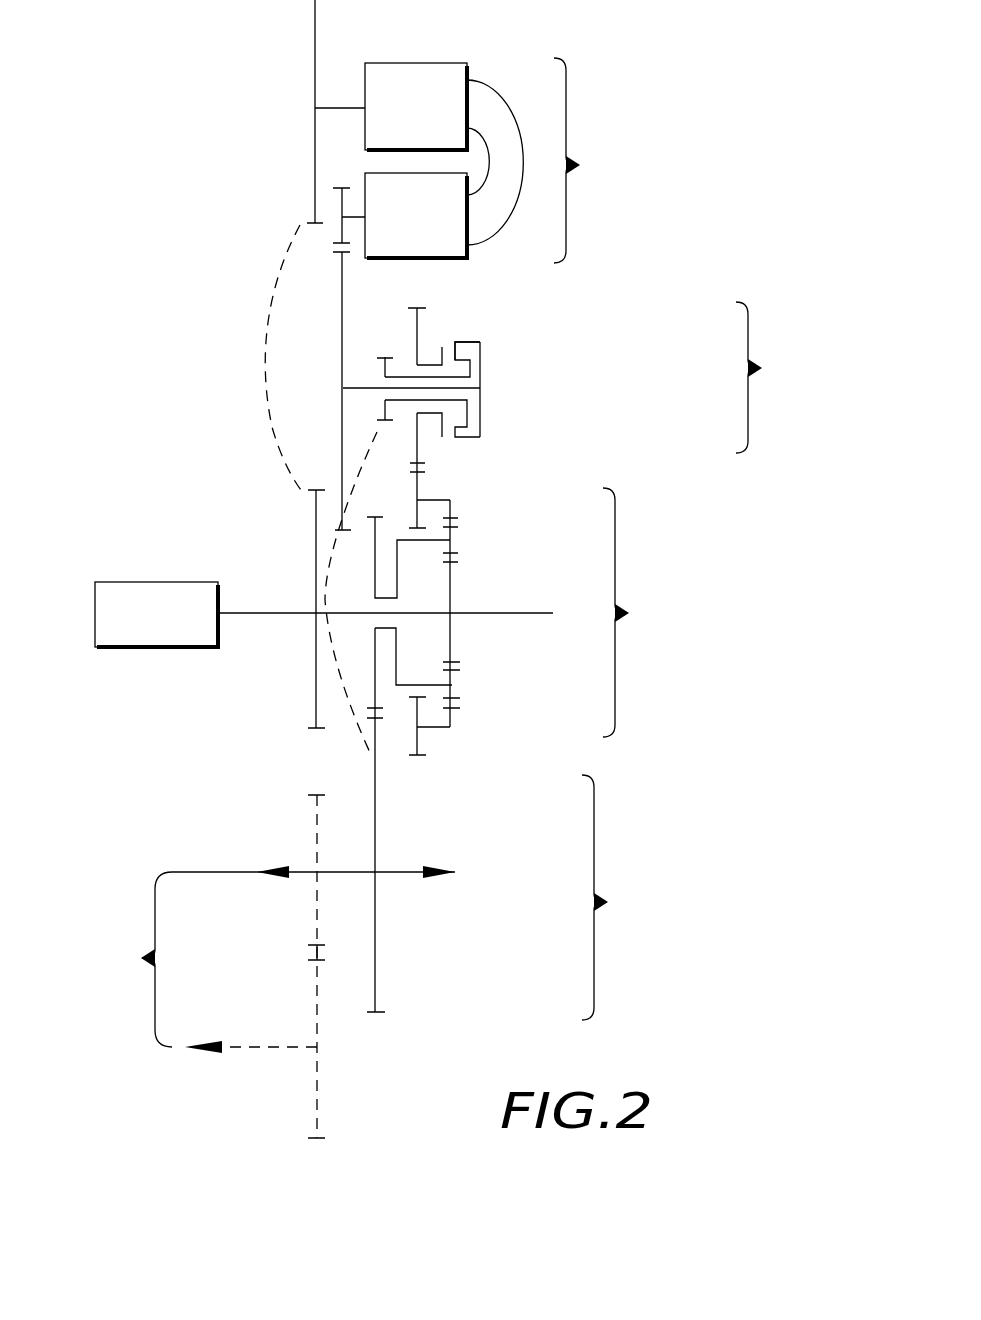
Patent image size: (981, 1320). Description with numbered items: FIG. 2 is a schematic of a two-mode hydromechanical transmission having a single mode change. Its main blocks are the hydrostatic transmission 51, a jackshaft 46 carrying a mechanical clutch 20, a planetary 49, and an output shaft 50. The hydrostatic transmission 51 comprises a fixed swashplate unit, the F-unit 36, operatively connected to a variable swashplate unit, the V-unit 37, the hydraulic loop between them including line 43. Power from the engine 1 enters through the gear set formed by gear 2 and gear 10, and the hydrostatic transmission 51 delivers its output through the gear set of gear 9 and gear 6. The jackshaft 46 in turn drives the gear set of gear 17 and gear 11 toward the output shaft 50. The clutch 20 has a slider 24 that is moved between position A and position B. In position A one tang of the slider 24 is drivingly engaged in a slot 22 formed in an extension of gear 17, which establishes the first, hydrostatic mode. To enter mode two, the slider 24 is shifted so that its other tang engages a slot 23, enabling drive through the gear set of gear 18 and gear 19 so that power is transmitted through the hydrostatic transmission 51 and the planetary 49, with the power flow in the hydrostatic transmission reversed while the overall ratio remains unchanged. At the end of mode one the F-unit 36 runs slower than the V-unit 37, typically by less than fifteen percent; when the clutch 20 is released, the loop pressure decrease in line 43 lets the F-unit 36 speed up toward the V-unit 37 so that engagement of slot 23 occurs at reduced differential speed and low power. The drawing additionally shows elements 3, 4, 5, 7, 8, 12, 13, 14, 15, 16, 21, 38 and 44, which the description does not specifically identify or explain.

The engine 1 is at (143, 583).
The gear 2 is at (316, 677).
The PTO shaft 3 is at (452, 575).
The gear 4 is at (452, 547).
The gear 5 is at (452, 508).
The gear 6 is at (395, 567).
The main shaft 7 is at (377, 530).
The drive connection 8 is at (343, 420).
The gear 9 is at (342, 205).
The gear 10 is at (315, 164).
The gear 11 is at (375, 770).
The axle shaft 12 is at (397, 867).
The second output shaft 13 is at (317, 812).
The gear 14 is at (317, 963).
The axle shaft 15 is at (273, 1047).
The axle shaft 16 is at (303, 870).
The gear 17 is at (382, 357).
The gear 18 is at (410, 308).
The gear 19 is at (417, 487).
The mechanical clutch 20 is at (620, 405).
The PTO shaft 21 is at (484, 613).
The slot 22 is at (480, 372).
The slot 23 is at (442, 348).
The slider 24 is at (466, 366).
The F-unit 36 is at (448, 247).
The V-unit 37 is at (457, 68).
The engine output shaft 38 is at (253, 612).
The line 43 is at (475, 130).
The hydraulic line 44 is at (507, 220).
The jackshaft 46 is at (771, 377).
The planetary 49 is at (639, 612).
The output shaft 50 is at (616, 897).
The hydrostatic transmission 51 is at (593, 160).